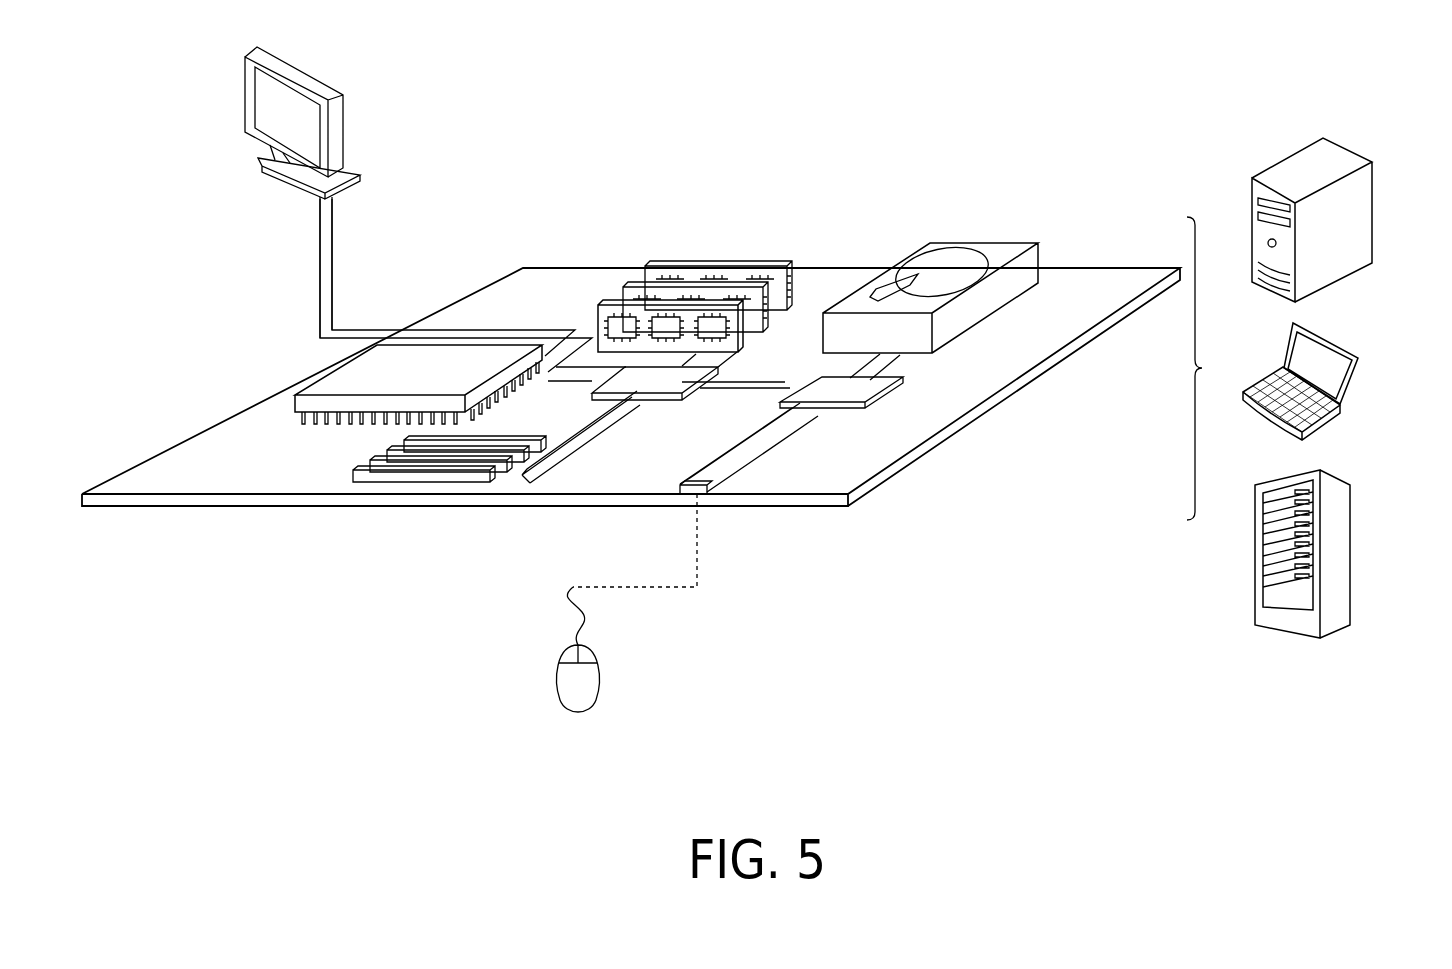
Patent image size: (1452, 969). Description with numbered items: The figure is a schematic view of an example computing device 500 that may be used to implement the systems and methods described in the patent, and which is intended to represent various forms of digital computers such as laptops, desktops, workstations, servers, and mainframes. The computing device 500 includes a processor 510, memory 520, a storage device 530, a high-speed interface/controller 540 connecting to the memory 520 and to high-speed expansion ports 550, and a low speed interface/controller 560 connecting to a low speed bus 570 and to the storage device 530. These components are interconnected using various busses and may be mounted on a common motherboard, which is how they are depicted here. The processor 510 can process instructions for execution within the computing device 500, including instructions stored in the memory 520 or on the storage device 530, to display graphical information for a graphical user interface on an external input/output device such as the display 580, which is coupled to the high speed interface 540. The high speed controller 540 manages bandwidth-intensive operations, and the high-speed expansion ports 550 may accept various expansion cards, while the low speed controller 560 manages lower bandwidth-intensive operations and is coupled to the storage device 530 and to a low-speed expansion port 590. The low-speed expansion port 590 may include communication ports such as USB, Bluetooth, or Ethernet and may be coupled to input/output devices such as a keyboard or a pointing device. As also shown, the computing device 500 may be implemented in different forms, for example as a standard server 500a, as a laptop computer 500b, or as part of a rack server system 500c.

The computing device 500 is at (798, 118).
The standard server 500a is at (1283, 158).
The laptop computer 500b is at (1338, 342).
The rack server system 500c is at (1348, 534).
The processor 510 is at (294, 398).
The memory 520 is at (714, 264).
The storage device 530 is at (980, 243).
The high-speed interface/controller 540 is at (660, 402).
The high-speed expansion ports 550 is at (352, 473).
The low speed interface/controller 560 is at (828, 385).
The low speed bus 570 is at (782, 447).
The display 580 is at (244, 97).
The low-speed expansion port 590 is at (706, 496).